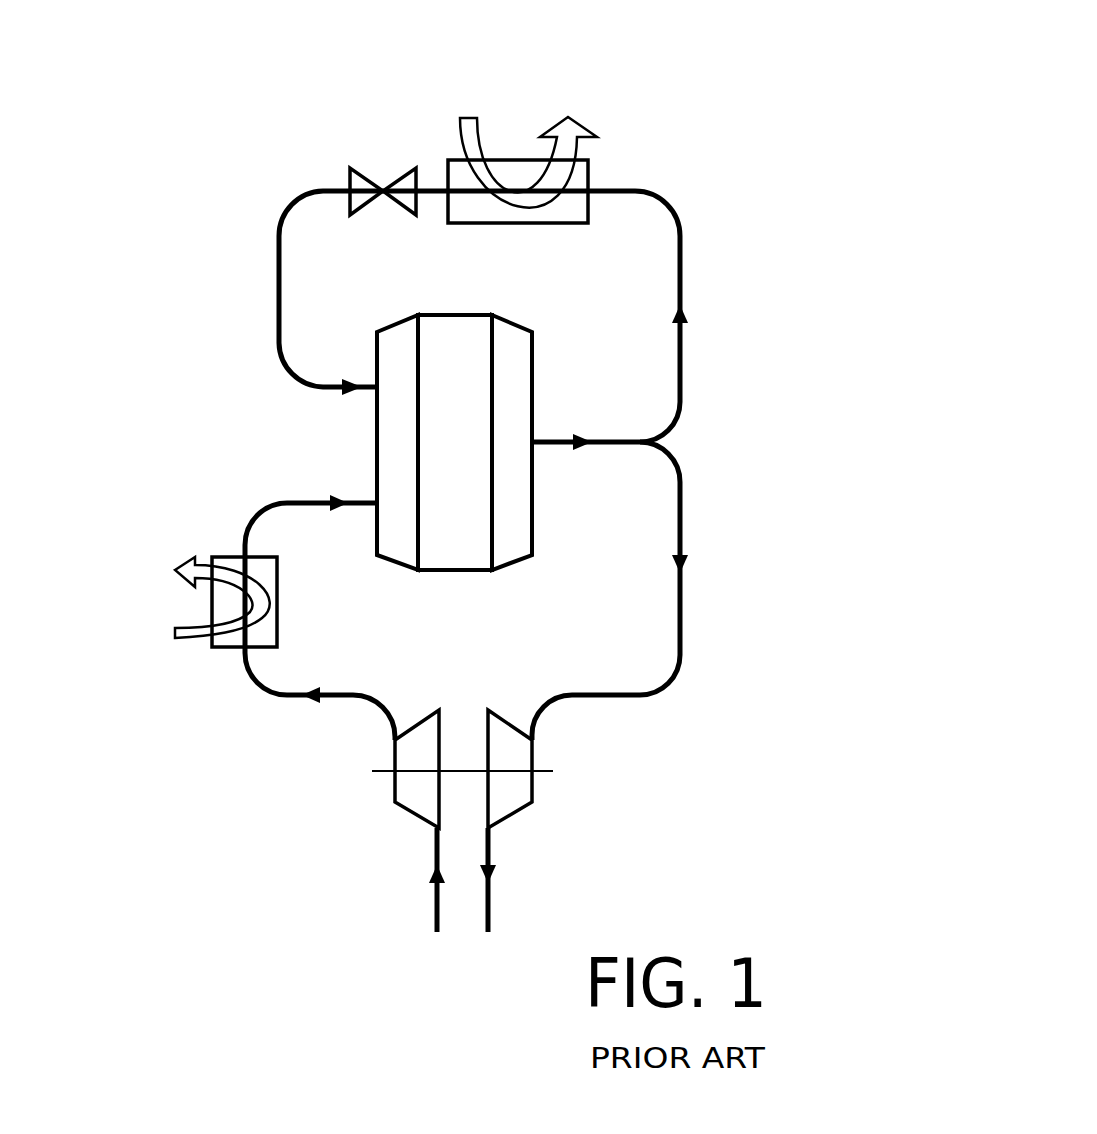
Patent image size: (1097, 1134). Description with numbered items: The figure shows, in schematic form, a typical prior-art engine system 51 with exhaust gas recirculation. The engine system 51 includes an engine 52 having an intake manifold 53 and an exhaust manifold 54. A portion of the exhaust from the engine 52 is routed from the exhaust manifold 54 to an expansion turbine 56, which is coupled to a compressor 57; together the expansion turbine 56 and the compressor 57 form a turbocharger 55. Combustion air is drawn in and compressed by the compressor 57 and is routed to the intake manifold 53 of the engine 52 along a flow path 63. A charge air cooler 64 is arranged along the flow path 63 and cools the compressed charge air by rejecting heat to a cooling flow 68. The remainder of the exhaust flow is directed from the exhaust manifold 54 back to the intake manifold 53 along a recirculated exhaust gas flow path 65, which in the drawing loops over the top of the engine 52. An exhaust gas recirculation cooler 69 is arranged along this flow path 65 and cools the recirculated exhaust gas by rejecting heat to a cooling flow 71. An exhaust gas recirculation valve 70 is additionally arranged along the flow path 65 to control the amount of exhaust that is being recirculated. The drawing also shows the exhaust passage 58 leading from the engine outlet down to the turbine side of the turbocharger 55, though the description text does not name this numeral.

The engine system 51 is at (758, 132).
The engine 52 is at (452, 491).
The intake manifold 53 is at (395, 552).
The exhaust manifold 54 is at (520, 567).
The turbocharger 55 is at (520, 835).
The expansion turbine 56 is at (525, 787).
The compressor 57 is at (412, 793).
The exhaust passage 58 is at (683, 667).
The flow path 63 is at (265, 695).
The charge air cooler 64 is at (213, 647).
The recirculated exhaust gas flow path 65 is at (681, 265).
The cooling flow 68 is at (188, 558).
The exhaust gas recirculation cooler 69 is at (572, 225).
The exhaust gas recirculation valve 70 is at (367, 172).
The cooling flow 71 is at (578, 117).